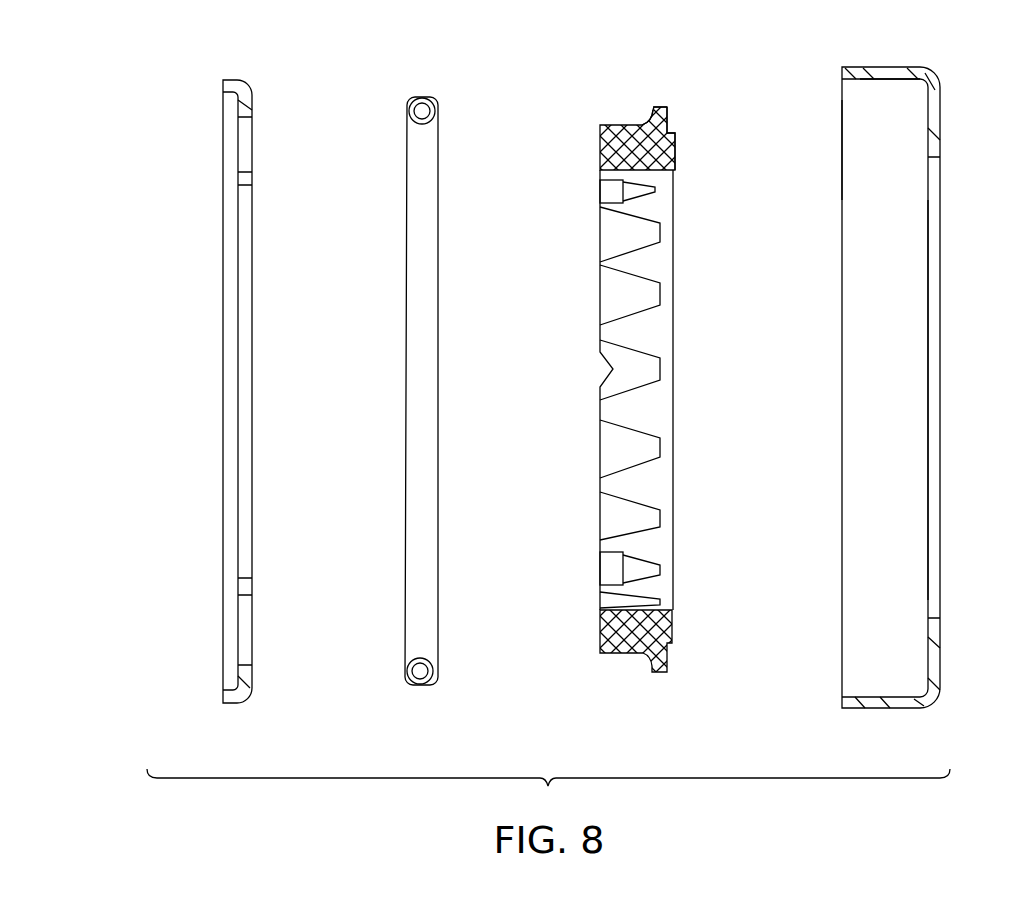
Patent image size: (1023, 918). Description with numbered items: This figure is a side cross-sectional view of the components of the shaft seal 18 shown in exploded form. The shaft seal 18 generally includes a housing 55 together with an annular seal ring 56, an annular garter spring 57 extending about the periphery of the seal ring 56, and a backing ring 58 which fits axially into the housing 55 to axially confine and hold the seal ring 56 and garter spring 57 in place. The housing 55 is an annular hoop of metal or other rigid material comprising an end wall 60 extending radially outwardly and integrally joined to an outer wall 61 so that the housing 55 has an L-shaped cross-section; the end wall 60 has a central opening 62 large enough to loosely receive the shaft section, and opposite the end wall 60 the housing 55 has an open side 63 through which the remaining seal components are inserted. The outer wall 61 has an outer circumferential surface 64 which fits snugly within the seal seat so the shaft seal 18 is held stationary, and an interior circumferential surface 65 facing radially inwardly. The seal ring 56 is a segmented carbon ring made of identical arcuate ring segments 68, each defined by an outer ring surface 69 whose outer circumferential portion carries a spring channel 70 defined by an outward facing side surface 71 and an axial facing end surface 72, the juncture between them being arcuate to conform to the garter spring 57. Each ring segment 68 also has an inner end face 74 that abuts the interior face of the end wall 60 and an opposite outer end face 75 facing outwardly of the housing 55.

The shaft seal 18 is at (365, 718).
The housing 55 is at (887, 363).
The annular seal ring 56 is at (669, 99).
The annular garter spring 57 is at (432, 95).
The backing ring 58 is at (248, 78).
The end wall 60 is at (941, 140).
The outer wall 61 is at (891, 79).
The central opening 62 is at (931, 233).
The open side 63 is at (837, 607).
The outer circumferential surface 64 is at (886, 66).
The interior circumferential surface 65 is at (886, 94).
The arcuate ring segments 68 is at (674, 273).
The outer ring surface 69 is at (658, 673).
The spring channel 70 is at (645, 100).
The outward facing side surface 71 is at (622, 126).
The axial facing end surface 72 is at (649, 118).
The inner end face 74 is at (676, 140).
The outer end face 75 is at (620, 268).